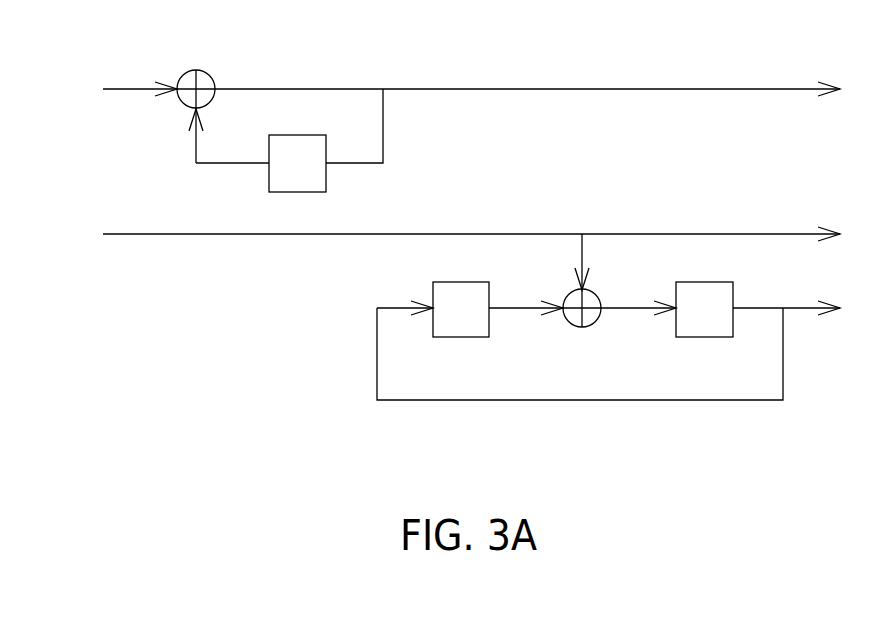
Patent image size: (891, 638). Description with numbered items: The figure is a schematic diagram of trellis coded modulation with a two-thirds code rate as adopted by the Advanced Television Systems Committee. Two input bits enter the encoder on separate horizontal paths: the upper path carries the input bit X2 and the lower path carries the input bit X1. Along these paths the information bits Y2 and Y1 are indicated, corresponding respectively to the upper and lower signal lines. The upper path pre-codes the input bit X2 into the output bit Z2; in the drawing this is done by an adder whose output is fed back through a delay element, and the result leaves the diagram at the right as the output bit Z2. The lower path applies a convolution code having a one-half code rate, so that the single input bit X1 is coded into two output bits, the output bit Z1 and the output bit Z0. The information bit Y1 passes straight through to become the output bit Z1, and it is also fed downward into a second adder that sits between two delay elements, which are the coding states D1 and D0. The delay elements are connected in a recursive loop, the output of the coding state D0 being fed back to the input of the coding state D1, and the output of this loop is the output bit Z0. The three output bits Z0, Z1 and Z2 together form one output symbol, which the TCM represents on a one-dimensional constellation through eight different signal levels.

The input bit X2 is at (115, 73).
The information bit Y2 is at (299, 121).
The output bit Z2 is at (627, 73).
The input bit X1 is at (225, 216).
The information bit Y1 is at (489, 216).
The output bit Z1 is at (726, 219).
The output bit Z0 is at (624, 317).
The coding state D1 is at (461, 333).
The coding state D0 is at (704, 333).